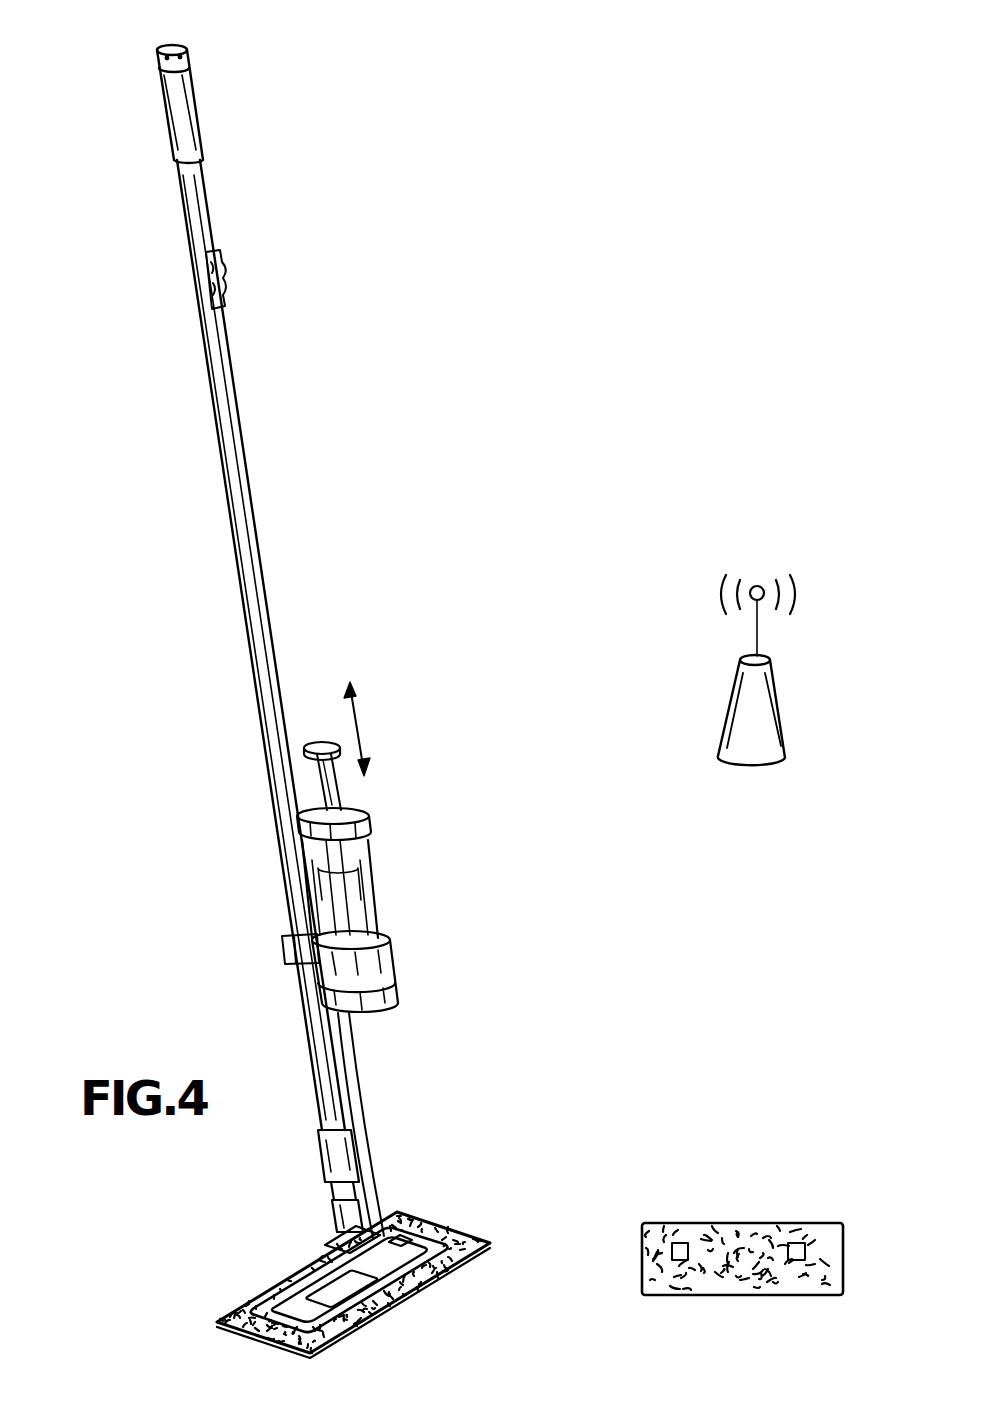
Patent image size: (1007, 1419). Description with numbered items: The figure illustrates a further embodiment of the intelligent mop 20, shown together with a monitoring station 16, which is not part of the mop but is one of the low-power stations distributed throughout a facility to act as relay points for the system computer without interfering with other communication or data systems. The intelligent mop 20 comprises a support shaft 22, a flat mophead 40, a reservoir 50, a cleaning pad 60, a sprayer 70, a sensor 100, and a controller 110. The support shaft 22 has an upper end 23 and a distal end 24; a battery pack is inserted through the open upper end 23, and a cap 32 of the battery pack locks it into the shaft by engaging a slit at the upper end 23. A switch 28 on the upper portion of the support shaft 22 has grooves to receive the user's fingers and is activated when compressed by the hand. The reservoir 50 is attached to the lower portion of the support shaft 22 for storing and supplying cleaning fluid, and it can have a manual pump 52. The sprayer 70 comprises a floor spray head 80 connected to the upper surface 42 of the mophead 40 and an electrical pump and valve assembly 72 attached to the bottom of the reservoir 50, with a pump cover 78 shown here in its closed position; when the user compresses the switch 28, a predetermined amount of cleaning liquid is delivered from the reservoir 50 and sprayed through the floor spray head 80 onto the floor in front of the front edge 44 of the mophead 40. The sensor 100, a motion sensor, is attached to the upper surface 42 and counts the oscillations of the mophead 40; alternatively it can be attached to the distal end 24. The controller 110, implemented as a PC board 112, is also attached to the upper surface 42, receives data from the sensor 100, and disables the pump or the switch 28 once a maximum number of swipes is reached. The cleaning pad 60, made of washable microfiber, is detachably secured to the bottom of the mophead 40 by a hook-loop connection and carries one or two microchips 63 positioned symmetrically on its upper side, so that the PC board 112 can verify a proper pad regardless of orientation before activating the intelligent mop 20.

The monitoring station 16 is at (763, 694).
The intelligent mop 20 is at (483, 287).
The support shaft 22 is at (243, 453).
The upper end 23 is at (190, 77).
The distal end 24 is at (307, 1035).
The switch 28 is at (226, 264).
The cap 32 is at (184, 43).
The flat mophead 40 is at (400, 1231).
The upper surface 42 is at (420, 1220).
The front edge 44 is at (423, 1279).
The reservoir 50 is at (367, 872).
The manual pump 52 is at (342, 797).
The cleaning pad 60 is at (742, 1224).
The microchip 63 is at (643, 1232).
The sprayer 70 is at (376, 1050).
The electrical pump and valve assembly 72 is at (421, 971).
The pump cover 78 is at (393, 989).
The floor spray head 80 is at (355, 1312).
The sensor 100 is at (447, 1270).
The controller 110 is at (277, 1285).
The PC board 112 is at (283, 1287).